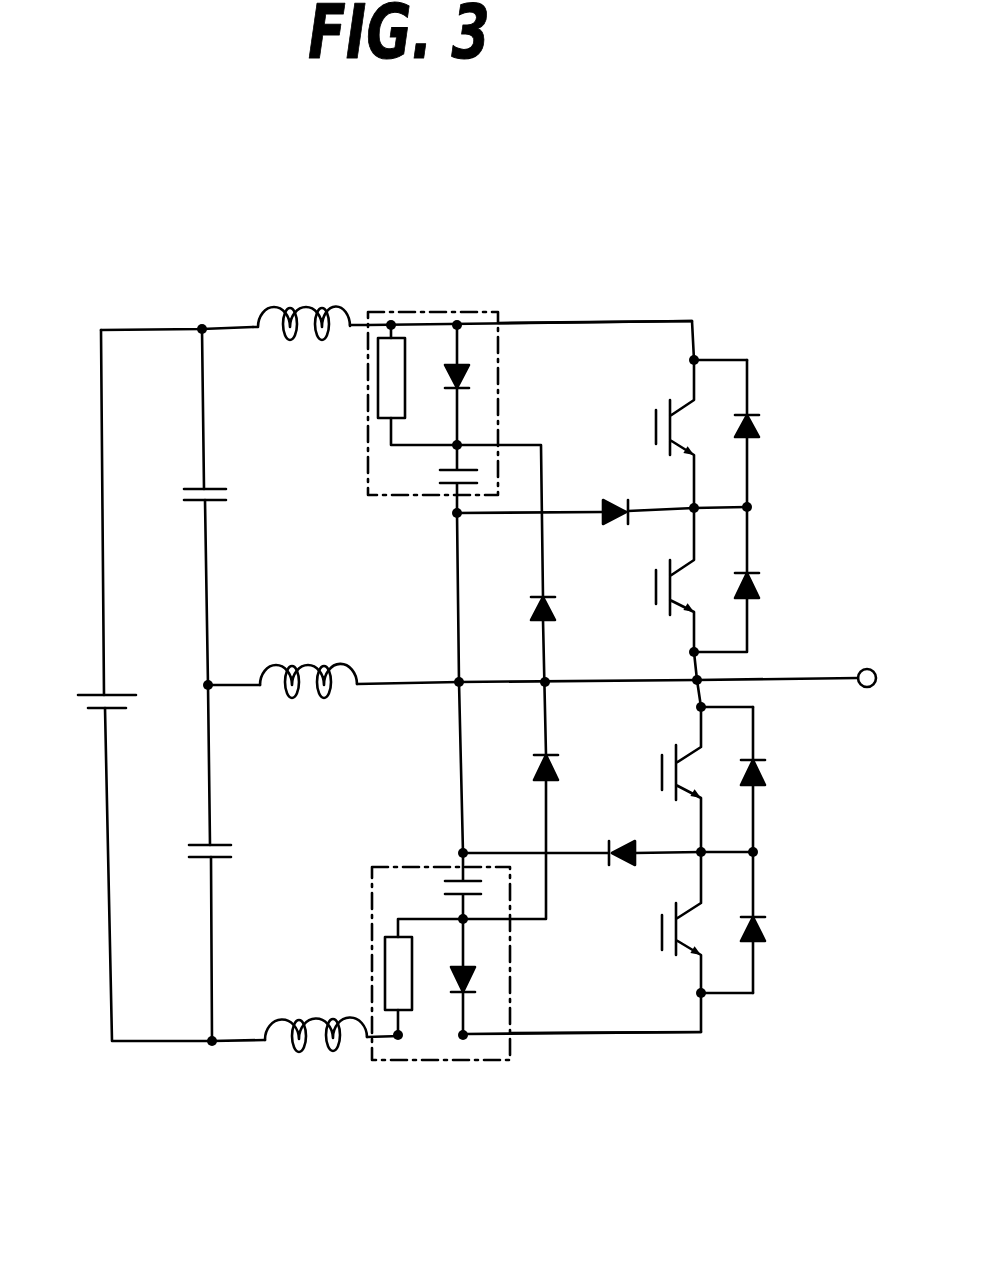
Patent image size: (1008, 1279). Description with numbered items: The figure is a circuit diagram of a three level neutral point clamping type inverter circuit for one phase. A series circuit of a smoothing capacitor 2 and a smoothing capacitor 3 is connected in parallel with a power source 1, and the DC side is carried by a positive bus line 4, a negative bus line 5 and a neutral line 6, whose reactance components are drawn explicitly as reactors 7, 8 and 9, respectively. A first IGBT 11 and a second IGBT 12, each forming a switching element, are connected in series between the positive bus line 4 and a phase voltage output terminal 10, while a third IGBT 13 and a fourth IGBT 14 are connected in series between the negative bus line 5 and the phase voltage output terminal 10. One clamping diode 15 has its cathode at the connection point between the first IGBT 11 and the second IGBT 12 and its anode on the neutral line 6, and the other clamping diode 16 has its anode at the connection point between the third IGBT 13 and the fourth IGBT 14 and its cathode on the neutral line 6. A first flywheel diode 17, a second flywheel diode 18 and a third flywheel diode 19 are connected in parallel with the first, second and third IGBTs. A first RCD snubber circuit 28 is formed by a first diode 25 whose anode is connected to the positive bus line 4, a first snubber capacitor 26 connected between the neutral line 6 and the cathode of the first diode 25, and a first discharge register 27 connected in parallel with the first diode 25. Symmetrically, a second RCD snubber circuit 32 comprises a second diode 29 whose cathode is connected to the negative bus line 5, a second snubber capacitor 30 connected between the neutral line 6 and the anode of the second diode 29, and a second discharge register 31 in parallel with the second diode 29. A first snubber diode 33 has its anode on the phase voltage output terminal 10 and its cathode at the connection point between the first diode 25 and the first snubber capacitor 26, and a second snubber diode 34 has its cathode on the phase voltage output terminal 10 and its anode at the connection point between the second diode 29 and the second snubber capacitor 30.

The power source 1 is at (85, 693).
The smoothing capacitor 2 is at (195, 489).
The smoothing capacitor 3 is at (200, 845).
The positive bus line 4 is at (556, 322).
The negative bus line 5 is at (568, 1040).
The neutral line 6 is at (458, 637).
The reactor 7 is at (287, 343).
The reactor 8 is at (318, 690).
The reactor 9 is at (300, 1050).
The phase voltage output terminal 10 is at (873, 668).
The first IGBT 11 is at (700, 418).
The second IGBT 12 is at (697, 580).
The third IGBT 13 is at (705, 765).
The fourth IGBT 14 is at (705, 920).
The clamping diode 15 is at (612, 520).
The clamping diode 16 is at (625, 865).
The first flywheel diode 17 is at (757, 428).
The second flywheel diode 18 is at (758, 592).
The third flywheel diode 19 is at (763, 775).
The first diode 25 is at (470, 378).
The first snubber capacitor 26 is at (438, 505).
The first discharge register 27 is at (380, 418).
The first RCD snubber circuit 28 is at (412, 310).
The second diode 29 is at (475, 970).
The second snubber capacitor 30 is at (450, 880).
The second discharge register 31 is at (378, 948).
The second RCD snubber circuit 32 is at (418, 1063).
The first snubber diode 33 is at (538, 600).
The second snubber diode 34 is at (538, 758).